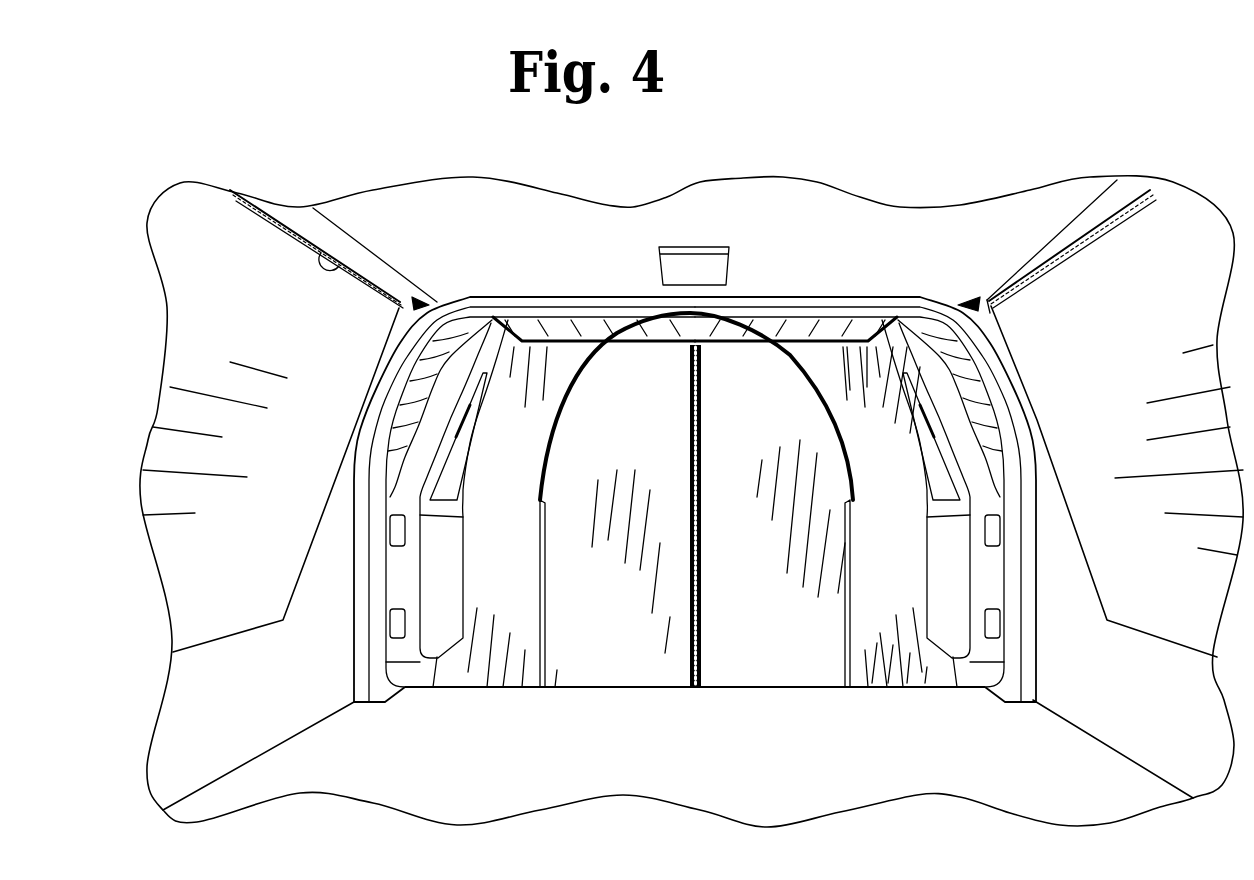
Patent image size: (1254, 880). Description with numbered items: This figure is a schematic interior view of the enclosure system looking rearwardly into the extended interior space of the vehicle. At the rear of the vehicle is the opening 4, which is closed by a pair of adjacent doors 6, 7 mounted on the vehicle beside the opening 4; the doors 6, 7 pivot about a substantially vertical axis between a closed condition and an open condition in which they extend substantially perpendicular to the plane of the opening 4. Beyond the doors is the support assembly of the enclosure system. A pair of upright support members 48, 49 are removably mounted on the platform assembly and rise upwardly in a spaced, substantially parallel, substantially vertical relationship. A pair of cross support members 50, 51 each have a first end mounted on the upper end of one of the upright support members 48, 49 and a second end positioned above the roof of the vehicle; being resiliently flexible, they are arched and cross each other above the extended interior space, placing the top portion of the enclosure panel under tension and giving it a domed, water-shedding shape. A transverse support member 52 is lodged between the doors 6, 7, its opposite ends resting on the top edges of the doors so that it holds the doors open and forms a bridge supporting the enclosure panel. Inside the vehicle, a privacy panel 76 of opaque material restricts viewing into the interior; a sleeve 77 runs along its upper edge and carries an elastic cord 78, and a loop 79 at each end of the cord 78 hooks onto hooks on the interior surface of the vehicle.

The opening 4 is at (883, 313).
The door 6 is at (943, 575).
The door 7 is at (447, 545).
The upright support member 48 is at (852, 628).
The upright support member 49 is at (543, 595).
The cross support member 50 is at (790, 372).
The cross support member 51 is at (568, 408).
The transverse support member 52 is at (652, 347).
The privacy panel 76 is at (279, 327).
The sleeve 77 is at (347, 266).
The cord 78 is at (414, 302).
The loop 79 is at (437, 305).